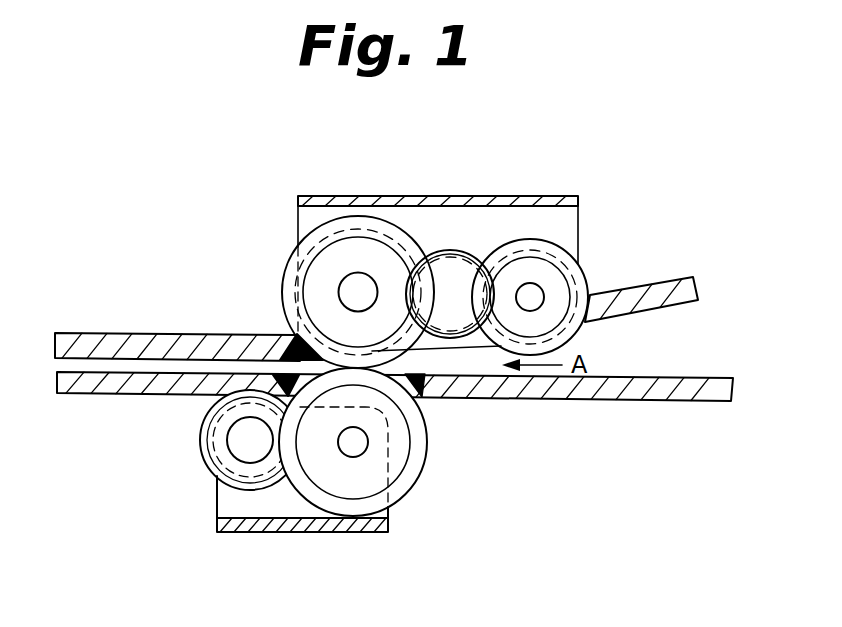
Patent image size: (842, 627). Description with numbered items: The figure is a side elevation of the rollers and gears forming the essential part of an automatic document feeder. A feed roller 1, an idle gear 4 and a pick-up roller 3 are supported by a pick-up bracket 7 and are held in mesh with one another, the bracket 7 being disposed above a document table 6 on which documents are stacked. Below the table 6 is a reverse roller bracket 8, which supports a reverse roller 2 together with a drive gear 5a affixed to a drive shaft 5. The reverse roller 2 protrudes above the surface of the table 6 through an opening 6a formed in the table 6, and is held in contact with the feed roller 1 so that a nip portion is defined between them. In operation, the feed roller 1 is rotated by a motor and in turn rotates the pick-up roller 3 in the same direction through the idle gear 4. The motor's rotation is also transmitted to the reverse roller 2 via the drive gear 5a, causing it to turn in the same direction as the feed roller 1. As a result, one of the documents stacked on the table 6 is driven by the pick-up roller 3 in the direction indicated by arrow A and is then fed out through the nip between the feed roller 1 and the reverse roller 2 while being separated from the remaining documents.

The feed roller 1 is at (283, 273).
The reverse roller 2 is at (415, 484).
The pick-up roller 3 is at (593, 280).
The idle gear 4 is at (476, 250).
The drive shaft 5 is at (200, 457).
The drive gear 5a is at (204, 440).
The document table 6 is at (660, 392).
The opening 6a is at (422, 403).
The pick-up bracket 7 is at (360, 195).
The reverse roller bracket 8 is at (283, 535).